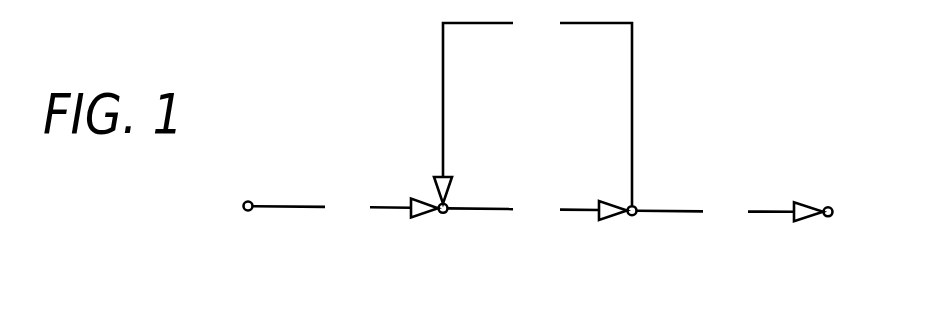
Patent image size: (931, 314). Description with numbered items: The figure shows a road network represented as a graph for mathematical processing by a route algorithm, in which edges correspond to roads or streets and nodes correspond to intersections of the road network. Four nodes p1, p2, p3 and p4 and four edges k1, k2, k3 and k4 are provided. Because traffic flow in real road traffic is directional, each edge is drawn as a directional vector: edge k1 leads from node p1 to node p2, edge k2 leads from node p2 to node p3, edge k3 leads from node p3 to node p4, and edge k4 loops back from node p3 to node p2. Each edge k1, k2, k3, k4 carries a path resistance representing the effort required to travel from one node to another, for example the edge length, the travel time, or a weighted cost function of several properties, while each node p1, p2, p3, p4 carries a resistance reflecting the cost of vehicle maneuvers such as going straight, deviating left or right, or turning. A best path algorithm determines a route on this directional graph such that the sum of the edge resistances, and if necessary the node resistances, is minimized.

The node p1 is at (252, 231).
The node p2 is at (442, 232).
The node p3 is at (631, 234).
The node p4 is at (820, 234).
The edge k1 is at (345, 208).
The edge k2 is at (537, 210).
The edge k3 is at (730, 210).
The edge k4 is at (533, 106).